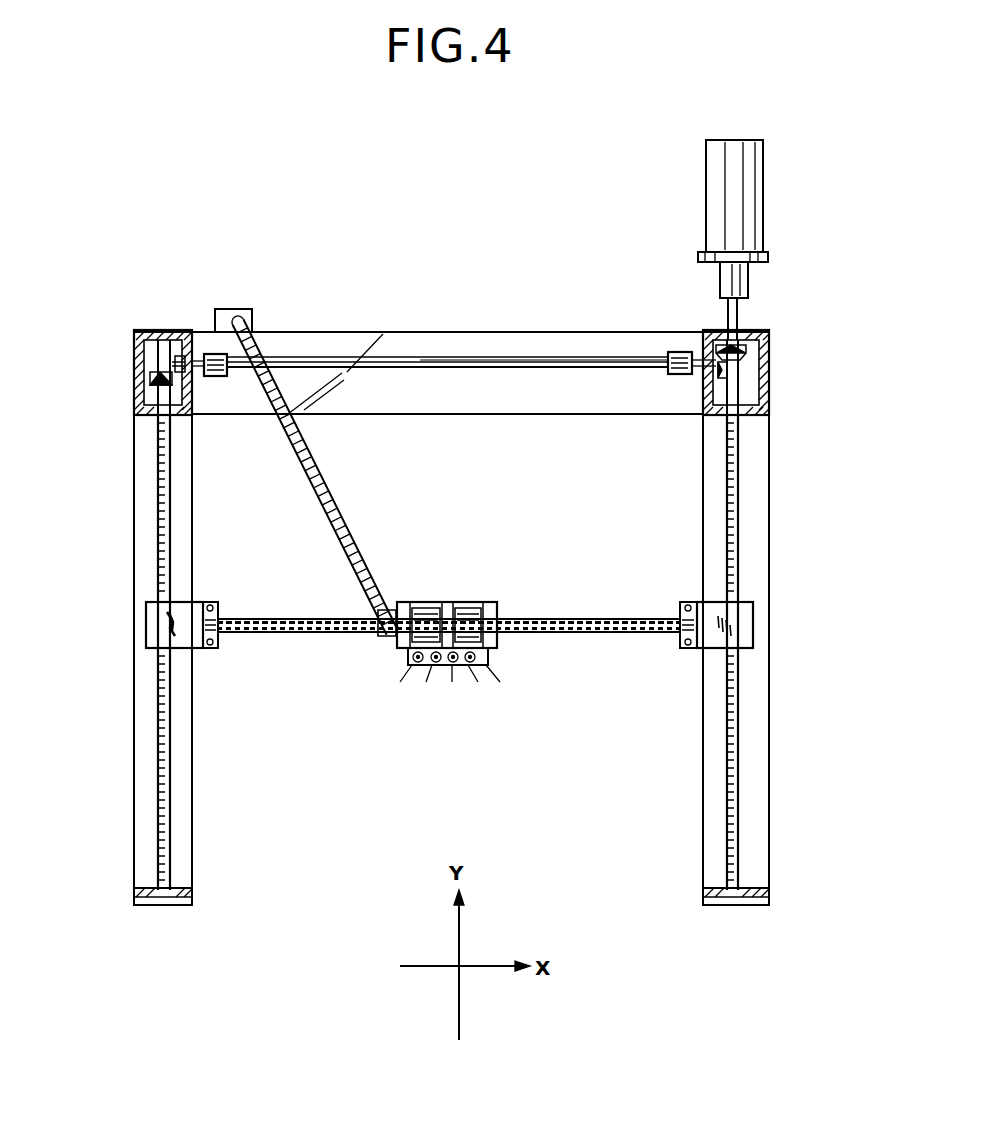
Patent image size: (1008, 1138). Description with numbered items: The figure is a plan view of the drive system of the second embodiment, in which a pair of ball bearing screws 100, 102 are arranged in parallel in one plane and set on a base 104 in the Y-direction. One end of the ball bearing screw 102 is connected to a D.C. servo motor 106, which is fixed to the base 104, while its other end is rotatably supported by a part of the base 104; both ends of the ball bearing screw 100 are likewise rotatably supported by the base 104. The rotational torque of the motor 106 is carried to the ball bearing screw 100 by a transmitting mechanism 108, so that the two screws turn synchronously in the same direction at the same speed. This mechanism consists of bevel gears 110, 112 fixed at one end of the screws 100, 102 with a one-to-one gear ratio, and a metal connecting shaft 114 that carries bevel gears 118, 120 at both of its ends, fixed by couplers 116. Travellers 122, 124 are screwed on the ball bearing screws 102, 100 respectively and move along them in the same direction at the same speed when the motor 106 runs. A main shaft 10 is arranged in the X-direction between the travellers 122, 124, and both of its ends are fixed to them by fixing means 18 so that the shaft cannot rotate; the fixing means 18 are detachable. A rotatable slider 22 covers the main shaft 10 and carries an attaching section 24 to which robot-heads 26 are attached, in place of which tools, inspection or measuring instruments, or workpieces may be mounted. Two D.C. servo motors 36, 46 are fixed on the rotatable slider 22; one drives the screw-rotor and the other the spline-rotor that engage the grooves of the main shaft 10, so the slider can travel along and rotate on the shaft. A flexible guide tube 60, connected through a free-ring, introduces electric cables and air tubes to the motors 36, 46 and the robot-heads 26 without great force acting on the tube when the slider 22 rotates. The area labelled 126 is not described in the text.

The main shaft 10 is at (575, 612).
The fixing means 18 is at (208, 648).
The rotatable slider 22 is at (457, 598).
The attaching section 24 is at (408, 668).
The robot-heads 26 is at (520, 715).
The D.C. servo motor 36 is at (420, 628).
The D.C. servo motor 46 is at (478, 630).
The flexible guide tube 60 is at (338, 503).
The ball bearing screw 100 is at (158, 790).
The ball bearing screw 102 is at (742, 826).
The base 104 is at (771, 523).
The D.C. servo motor 106 is at (750, 202).
The transmitting mechanism 108 is at (470, 352).
The bevel gear 110 is at (748, 333).
The bevel gear 112 is at (148, 375).
The connecting shaft 114 is at (598, 356).
The couplers 116 is at (215, 355).
The bevel gear 118 is at (728, 368).
The bevel gear 120 is at (178, 330).
The traveller 122 is at (738, 622).
The traveller 124 is at (150, 610).
The recording area 126 is at (270, 535).